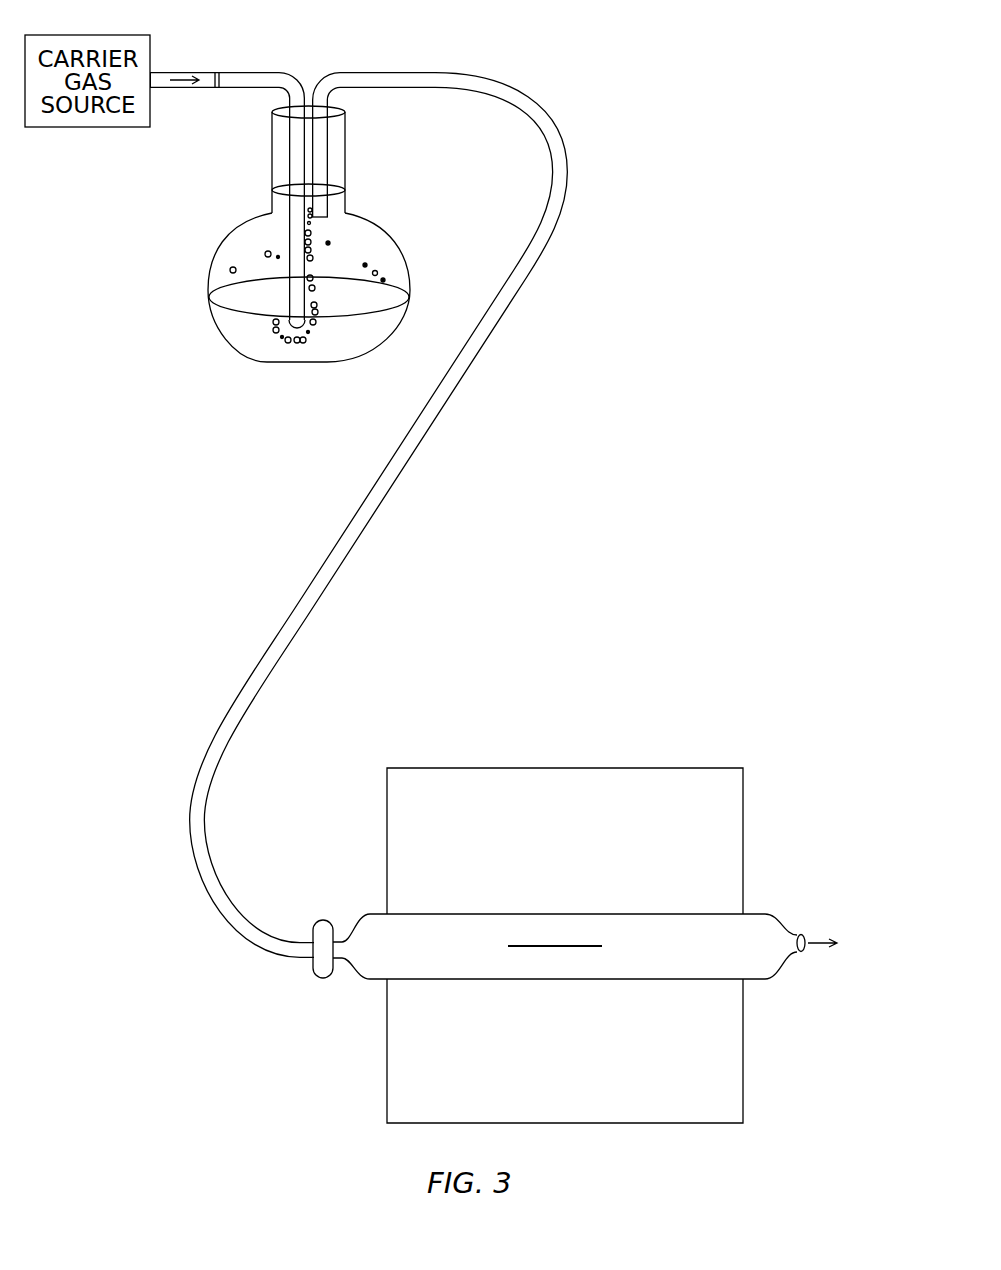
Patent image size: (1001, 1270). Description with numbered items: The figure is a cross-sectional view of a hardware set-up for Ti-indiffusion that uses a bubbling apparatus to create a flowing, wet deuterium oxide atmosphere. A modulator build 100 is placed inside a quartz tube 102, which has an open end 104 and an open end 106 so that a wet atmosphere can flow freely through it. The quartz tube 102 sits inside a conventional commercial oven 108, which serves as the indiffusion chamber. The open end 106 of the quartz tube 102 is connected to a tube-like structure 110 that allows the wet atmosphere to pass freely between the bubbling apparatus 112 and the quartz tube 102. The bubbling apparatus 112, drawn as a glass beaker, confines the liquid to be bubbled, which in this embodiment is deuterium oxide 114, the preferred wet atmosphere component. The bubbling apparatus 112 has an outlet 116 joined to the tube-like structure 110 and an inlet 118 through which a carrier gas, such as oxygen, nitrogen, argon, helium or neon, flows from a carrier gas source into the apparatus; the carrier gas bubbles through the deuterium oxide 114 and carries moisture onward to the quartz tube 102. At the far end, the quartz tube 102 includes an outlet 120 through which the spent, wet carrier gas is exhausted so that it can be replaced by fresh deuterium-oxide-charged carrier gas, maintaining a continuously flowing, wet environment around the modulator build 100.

The modulator build 100 is at (565, 945).
The quartz tube 102 is at (460, 972).
The open end 104 is at (782, 928).
The open end 106 is at (347, 935).
The oven 108 is at (697, 774).
The tube-like structure 110 is at (333, 545).
The bubbling apparatus 112 is at (381, 232).
The deuterium oxide 114 is at (380, 330).
The outlet 116 is at (378, 480).
The inlet 118 is at (264, 71).
The outlet 120 is at (810, 938).